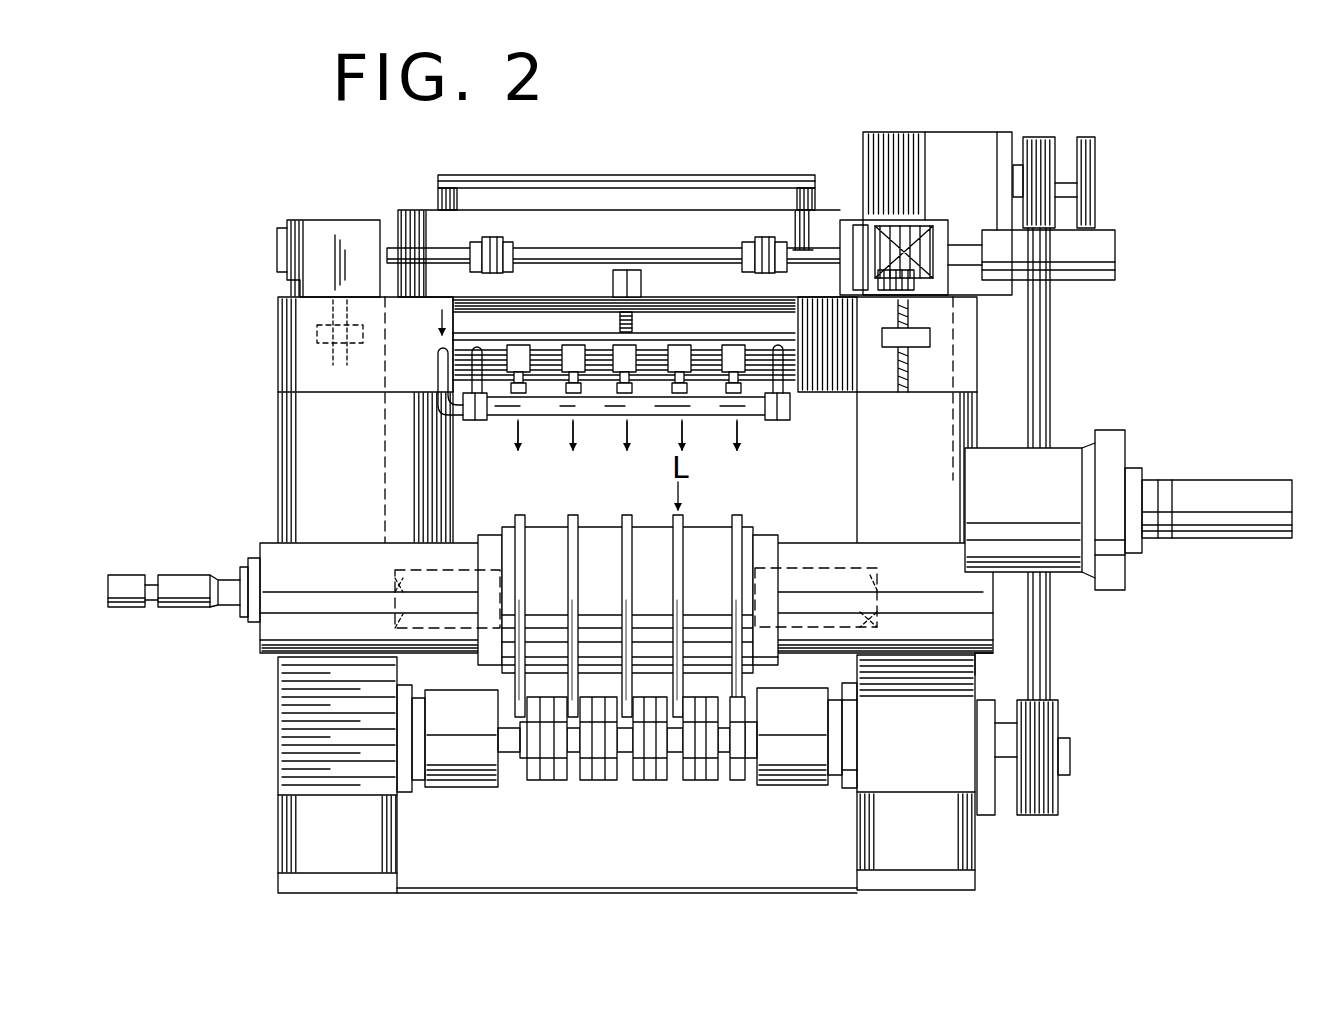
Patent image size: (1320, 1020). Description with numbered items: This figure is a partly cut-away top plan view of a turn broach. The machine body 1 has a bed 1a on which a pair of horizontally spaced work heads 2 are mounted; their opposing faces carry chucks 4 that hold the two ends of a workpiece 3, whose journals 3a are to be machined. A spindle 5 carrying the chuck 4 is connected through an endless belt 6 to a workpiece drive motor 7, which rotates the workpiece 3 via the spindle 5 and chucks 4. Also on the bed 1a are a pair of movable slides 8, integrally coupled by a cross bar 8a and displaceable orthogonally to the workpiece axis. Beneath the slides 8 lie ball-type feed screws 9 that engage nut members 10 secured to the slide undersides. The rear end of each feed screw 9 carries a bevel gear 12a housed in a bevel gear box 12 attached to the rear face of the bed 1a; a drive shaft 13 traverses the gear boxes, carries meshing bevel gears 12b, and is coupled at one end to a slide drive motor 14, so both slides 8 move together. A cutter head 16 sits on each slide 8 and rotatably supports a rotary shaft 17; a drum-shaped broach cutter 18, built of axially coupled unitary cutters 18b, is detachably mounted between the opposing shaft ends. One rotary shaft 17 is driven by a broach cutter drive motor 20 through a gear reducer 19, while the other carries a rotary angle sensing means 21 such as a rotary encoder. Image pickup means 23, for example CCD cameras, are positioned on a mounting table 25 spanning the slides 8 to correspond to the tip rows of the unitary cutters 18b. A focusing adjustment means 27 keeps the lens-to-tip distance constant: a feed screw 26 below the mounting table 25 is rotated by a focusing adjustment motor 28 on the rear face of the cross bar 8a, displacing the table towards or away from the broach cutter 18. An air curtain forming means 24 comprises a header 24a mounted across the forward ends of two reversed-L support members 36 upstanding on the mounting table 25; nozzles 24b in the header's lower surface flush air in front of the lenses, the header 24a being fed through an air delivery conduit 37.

The machine body 1 is at (276, 349).
The bed 1a is at (743, 862).
The work head 2 is at (300, 752).
The workpiece 3 is at (612, 770).
The journal 3a is at (572, 770).
The chuck 4 is at (468, 775).
The spindle 5 is at (855, 787).
The endless belt 6 is at (1050, 678).
The workpiece drive motor 7 is at (975, 150).
The movable slide 8 is at (282, 305).
The cross bar 8a is at (590, 285).
The feed screw 9 is at (320, 372).
The nut member 10 is at (345, 335).
The bevel gear box 12 is at (855, 248).
The bevel gear 12a is at (885, 262).
The bevel gear 12b is at (915, 232).
The drive shaft 13 is at (735, 248).
The slide drive motor 14 is at (1100, 248).
The cutter head 16 is at (263, 650).
The rotary shaft 17 is at (395, 588).
The broach cutter 18 is at (655, 548).
The unitary cutter 18b is at (527, 610).
The gear reducer 19 is at (1062, 478).
The broach cutter drive motor 20 is at (1200, 492).
The rotary angle sensing means 21 is at (140, 585).
The image pickup means 23 is at (567, 350).
The air curtain forming means 24 is at (478, 410).
The header 24a is at (707, 395).
The nozzle 24b is at (760, 398).
The mounting table 25 is at (670, 345).
The feed screw 26 is at (632, 315).
The focusing adjustment means 27 is at (612, 262).
The focusing adjustment motor 28 is at (628, 270).
The support member 36 is at (477, 350).
The air delivery conduit 37 is at (440, 362).